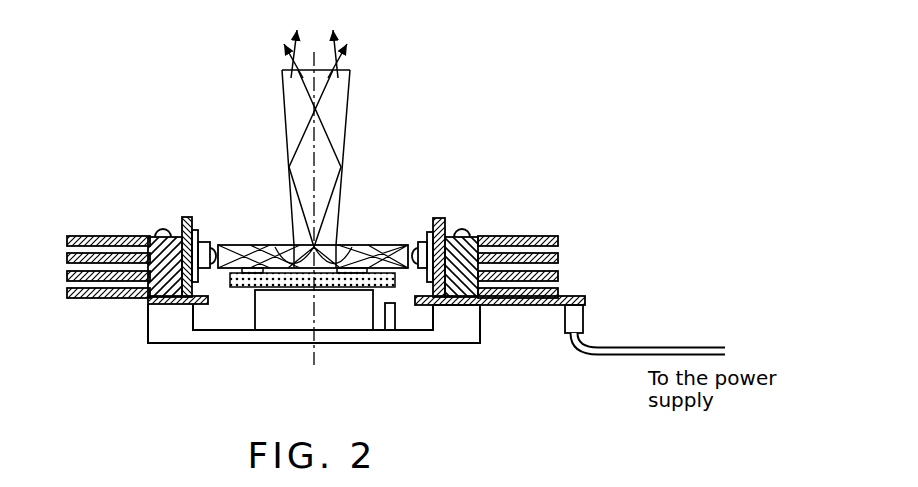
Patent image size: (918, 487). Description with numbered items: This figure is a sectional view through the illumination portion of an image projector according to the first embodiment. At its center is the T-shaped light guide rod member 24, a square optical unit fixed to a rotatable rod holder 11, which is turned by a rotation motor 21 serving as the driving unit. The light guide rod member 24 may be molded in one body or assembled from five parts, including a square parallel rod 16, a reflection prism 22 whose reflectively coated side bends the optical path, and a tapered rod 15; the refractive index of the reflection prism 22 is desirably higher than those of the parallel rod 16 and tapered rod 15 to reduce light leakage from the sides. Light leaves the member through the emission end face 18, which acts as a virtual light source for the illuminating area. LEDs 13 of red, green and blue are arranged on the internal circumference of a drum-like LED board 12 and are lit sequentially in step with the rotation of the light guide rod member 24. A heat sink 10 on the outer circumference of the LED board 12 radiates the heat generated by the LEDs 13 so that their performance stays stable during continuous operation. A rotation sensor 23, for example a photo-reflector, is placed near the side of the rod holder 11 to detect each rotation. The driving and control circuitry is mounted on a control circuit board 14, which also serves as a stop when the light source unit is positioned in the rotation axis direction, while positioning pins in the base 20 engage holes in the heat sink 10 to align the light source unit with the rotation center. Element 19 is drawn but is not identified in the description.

The heat sink 10 is at (558, 262).
The rod holder 11 is at (230, 287).
The LED board 12 is at (439, 218).
The LEDs 13 is at (424, 242).
The control circuit board 14 is at (522, 305).
The tapered rod 15 is at (348, 94).
The parallel rod 16 is at (352, 268).
The emission end face 18 is at (282, 70).
The semiconductor laser 19 is at (215, 245).
The base 20 is at (148, 322).
The rotation motor 21 is at (272, 312).
The reflection prism 22 is at (334, 266).
The rotation sensor 23 is at (398, 318).
The light guide rod member 24 is at (350, 136).